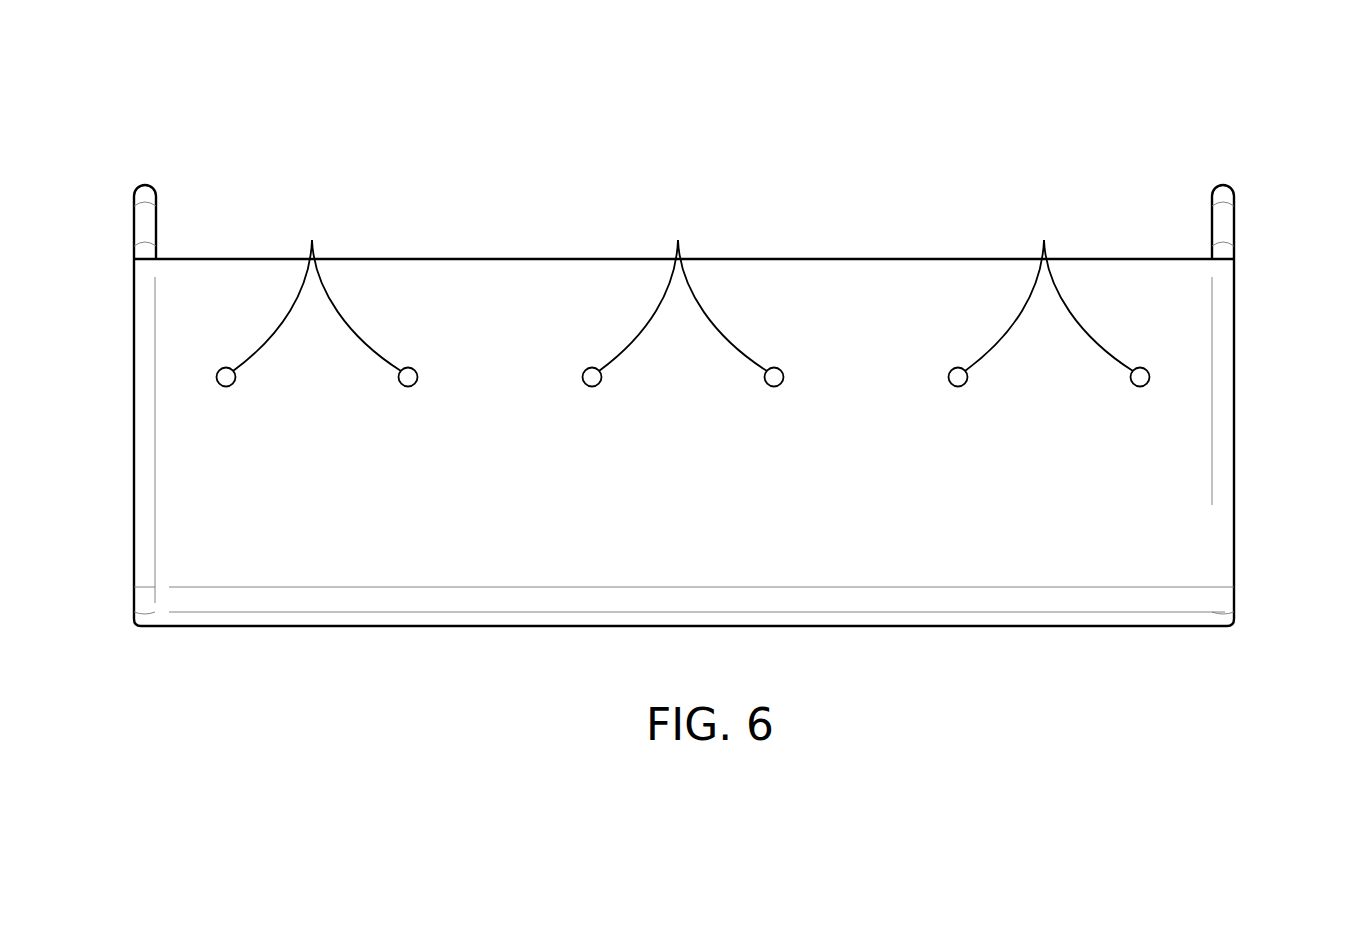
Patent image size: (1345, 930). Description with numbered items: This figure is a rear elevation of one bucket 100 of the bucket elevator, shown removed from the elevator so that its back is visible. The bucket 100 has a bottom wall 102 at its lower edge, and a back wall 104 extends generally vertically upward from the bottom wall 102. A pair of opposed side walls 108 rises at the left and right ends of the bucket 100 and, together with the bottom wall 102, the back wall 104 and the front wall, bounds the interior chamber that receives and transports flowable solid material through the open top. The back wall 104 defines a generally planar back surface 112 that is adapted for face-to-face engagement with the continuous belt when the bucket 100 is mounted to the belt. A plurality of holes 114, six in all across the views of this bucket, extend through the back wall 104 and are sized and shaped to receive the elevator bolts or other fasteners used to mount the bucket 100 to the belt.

The bucket 100 is at (1202, 108).
The bottom wall 102 is at (848, 626).
The back wall 104 is at (1140, 528).
The side walls 108 is at (134, 421).
The back surface 112 is at (559, 465).
The holes 114 is at (683, 296).